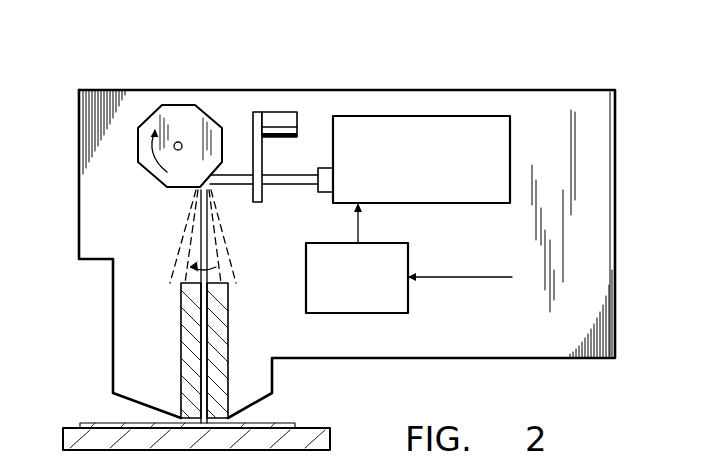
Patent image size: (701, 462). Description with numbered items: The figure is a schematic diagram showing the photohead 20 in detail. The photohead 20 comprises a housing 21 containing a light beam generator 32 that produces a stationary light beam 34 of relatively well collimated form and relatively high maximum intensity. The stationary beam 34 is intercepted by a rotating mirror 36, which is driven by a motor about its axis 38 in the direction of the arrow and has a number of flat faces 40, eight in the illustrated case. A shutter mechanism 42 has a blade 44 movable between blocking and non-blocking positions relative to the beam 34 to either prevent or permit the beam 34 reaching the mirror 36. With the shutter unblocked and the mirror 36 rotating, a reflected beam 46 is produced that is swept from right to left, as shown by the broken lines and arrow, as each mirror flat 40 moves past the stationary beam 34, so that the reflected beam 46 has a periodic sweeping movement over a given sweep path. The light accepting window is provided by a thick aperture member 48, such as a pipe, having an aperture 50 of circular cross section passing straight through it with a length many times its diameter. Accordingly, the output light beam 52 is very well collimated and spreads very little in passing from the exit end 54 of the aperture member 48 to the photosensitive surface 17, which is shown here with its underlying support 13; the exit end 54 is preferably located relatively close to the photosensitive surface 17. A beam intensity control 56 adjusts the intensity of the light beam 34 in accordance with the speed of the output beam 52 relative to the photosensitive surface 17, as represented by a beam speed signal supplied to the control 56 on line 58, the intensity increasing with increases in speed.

The substrate plate 13 is at (330, 441).
The photosensitive surface 17 is at (288, 423).
The photohead 20 is at (450, 90).
The housing 21 is at (523, 90).
The light beam generator 32 is at (510, 160).
The stationary light beam 34 is at (300, 185).
The rotating mirror 36 is at (182, 122).
The axis 38 is at (182, 152).
The flat faces 40 is at (169, 132).
The shutter mechanism 42 is at (272, 112).
The blade 44 is at (253, 155).
The reflected beam 46 is at (184, 233).
The aperture member 48 is at (181, 346).
The aperture 50 is at (209, 332).
The output light beam 52 is at (250, 417).
The exit end 54 is at (187, 420).
The beam intensity control 56 is at (372, 243).
The line 58 is at (476, 278).